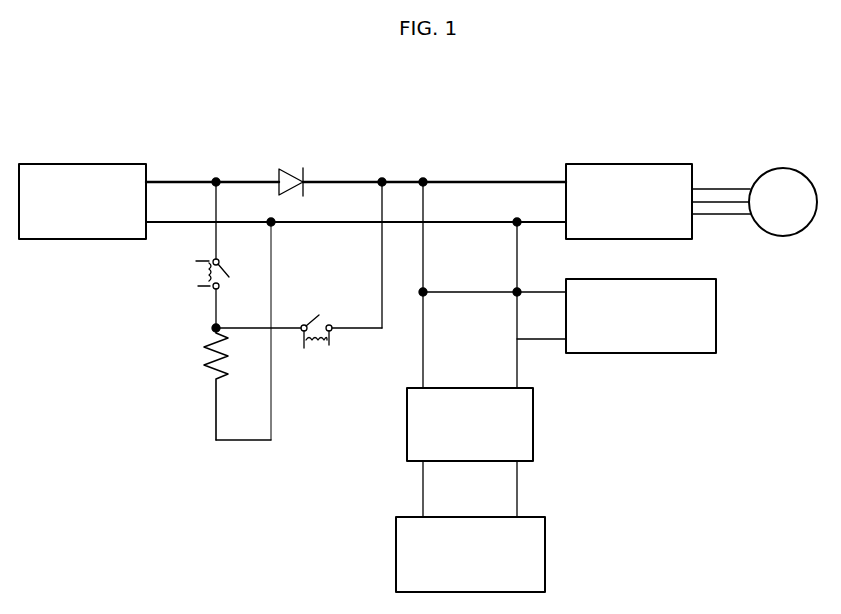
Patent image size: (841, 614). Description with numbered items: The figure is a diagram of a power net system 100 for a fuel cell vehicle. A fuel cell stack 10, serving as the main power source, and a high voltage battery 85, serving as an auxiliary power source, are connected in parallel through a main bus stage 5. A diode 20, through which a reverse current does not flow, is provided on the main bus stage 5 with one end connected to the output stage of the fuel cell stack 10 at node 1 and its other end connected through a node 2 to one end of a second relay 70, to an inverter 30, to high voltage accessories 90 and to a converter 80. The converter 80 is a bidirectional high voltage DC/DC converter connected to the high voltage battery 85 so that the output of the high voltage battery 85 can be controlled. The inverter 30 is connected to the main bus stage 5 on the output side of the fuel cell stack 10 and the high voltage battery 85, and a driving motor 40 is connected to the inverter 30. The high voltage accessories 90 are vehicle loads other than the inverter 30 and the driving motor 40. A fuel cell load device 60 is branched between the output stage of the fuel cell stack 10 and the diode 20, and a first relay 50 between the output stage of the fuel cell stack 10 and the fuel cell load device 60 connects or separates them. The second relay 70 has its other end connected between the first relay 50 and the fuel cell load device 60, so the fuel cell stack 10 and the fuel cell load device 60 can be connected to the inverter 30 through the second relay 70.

The power net system 100 is at (545, 91).
The fuel cell stack 10 is at (83, 164).
The first node 1 is at (216, 176).
The diode 20 is at (290, 168).
The node 2 is at (382, 176).
The main bus stage 5 is at (478, 178).
The inverter 30 is at (631, 164).
The driving motor 40 is at (785, 167).
The first relay 50 is at (208, 286).
The fuel cell load device 60 is at (206, 376).
The second relay 70 is at (330, 340).
The converter 80 is at (533, 428).
The high voltage battery 85 is at (545, 548).
The high voltage accessories 90 is at (716, 314).